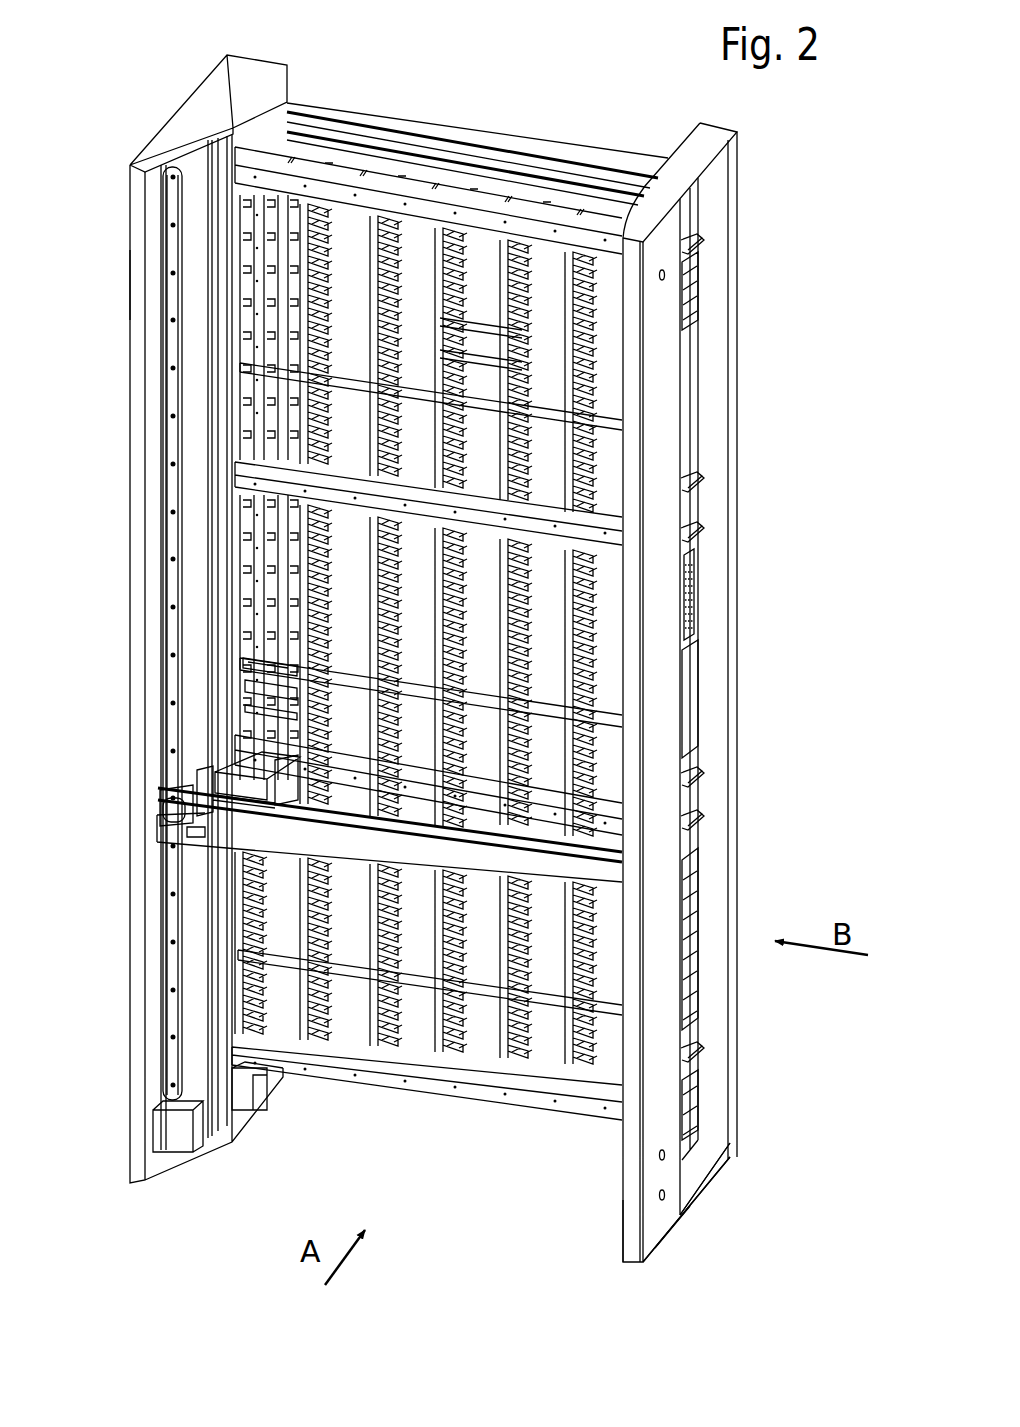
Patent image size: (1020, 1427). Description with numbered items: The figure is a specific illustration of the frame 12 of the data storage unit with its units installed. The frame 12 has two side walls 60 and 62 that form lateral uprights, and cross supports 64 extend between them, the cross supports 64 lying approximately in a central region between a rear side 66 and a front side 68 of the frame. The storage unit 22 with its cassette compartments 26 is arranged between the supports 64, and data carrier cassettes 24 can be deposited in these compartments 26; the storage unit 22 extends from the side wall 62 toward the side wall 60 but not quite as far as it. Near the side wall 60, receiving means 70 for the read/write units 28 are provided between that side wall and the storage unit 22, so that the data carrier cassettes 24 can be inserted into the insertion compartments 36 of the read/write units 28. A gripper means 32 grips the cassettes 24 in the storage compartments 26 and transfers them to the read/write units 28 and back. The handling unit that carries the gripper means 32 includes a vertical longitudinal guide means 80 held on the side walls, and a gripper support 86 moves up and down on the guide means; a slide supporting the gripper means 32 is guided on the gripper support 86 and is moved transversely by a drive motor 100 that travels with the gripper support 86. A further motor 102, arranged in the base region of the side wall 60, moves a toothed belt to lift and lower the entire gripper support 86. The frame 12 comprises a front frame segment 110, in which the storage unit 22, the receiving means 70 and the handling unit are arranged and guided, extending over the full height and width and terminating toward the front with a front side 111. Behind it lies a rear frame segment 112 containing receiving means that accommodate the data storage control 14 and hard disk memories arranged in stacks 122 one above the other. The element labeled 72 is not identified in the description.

The frame 12 is at (772, 194).
The data storage control 14 is at (700, 636).
The storage unit 22 is at (543, 442).
The data carrier cassettes 24 is at (550, 399).
The storage compartments 26 is at (555, 660).
The read/write units 28 is at (265, 638).
The gripper means 32 is at (290, 800).
The insertion compartments 36 is at (270, 692).
The side wall 60 is at (170, 121).
The side wall 62 is at (738, 336).
The cross supports 64 is at (536, 195).
The rear side 66 is at (302, 76).
The front side 68 is at (128, 254).
The receiving means 70 is at (250, 600).
The slide 72 is at (270, 716).
The longitudinal guide means 80 is at (175, 425).
The gripper support 86 is at (576, 876).
The drive motor 100 is at (158, 812).
The motor 102 is at (256, 1106).
The front frame segment 110 is at (672, 1232).
The front side 111 is at (626, 1218).
The rear frame segment 112 is at (724, 1165).
The stacks 122 is at (702, 300).